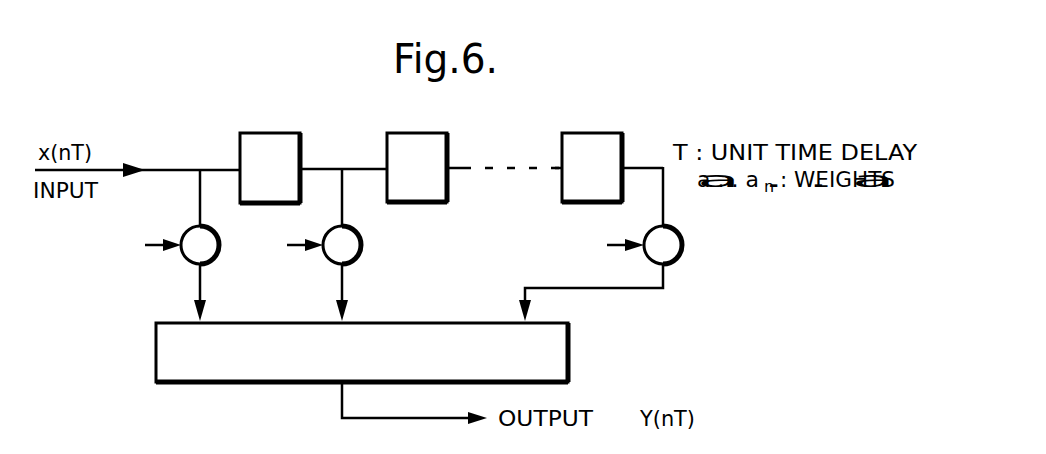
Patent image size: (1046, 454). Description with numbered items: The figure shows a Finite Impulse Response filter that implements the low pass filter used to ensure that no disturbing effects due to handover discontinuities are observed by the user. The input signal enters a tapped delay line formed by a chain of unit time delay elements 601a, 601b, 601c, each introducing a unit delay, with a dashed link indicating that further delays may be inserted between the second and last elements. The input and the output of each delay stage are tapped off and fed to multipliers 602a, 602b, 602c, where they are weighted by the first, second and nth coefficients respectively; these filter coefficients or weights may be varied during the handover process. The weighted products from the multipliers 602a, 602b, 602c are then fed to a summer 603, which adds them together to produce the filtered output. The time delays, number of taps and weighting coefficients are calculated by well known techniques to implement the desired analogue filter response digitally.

The unit time delay 601a is at (258, 133).
The unit time delay 601b is at (418, 133).
The unit time delay 601c is at (592, 133).
The multiplier 602a is at (187, 262).
The multiplier 602b is at (330, 262).
The multiplier 602c is at (678, 258).
The summer 603 is at (568, 362).